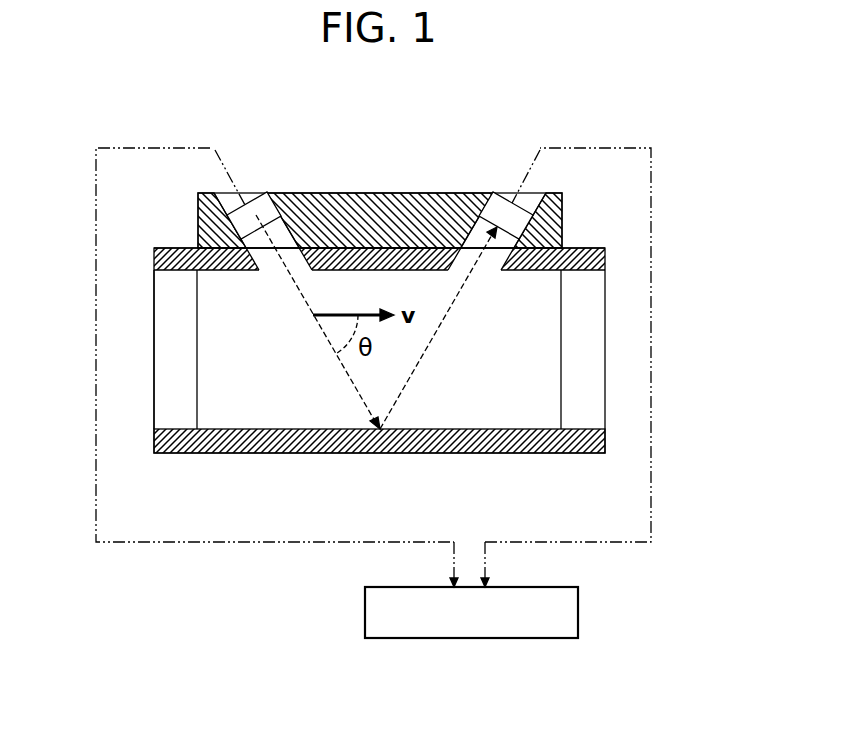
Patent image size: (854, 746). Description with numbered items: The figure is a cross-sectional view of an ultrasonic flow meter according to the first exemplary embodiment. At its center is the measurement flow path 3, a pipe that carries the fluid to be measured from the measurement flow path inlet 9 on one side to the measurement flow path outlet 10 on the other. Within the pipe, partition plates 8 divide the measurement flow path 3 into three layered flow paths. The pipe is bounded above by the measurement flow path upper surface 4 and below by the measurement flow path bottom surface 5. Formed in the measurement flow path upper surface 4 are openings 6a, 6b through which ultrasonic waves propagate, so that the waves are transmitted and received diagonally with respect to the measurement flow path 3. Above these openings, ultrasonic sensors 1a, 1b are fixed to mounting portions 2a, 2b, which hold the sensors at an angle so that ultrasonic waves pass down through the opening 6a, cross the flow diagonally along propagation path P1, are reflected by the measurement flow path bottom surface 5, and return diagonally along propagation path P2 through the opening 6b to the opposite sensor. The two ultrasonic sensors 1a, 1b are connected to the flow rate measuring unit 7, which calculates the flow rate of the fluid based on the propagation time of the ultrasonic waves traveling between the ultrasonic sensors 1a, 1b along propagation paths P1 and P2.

The ultrasonic sensor 1a is at (252, 195).
The ultrasonic sensor 1b is at (500, 195).
The mounting portion 2a is at (222, 195).
The mounting portion 2b is at (538, 195).
The measurement flow path 3 is at (220, 354).
The measurement flow path upper surface 4 is at (222, 274).
The measurement flow path bottom surface 5 is at (220, 425).
The opening 6a is at (273, 258).
The opening 6b is at (497, 258).
The flow rate measuring unit 7 is at (578, 610).
The partition plate 8 is at (197, 302).
The measurement flow path inlet 9 is at (165, 385).
The measurement flow path outlet 10 is at (606, 394).
The propagation path P1 is at (345, 370).
The propagation path P2 is at (413, 372).